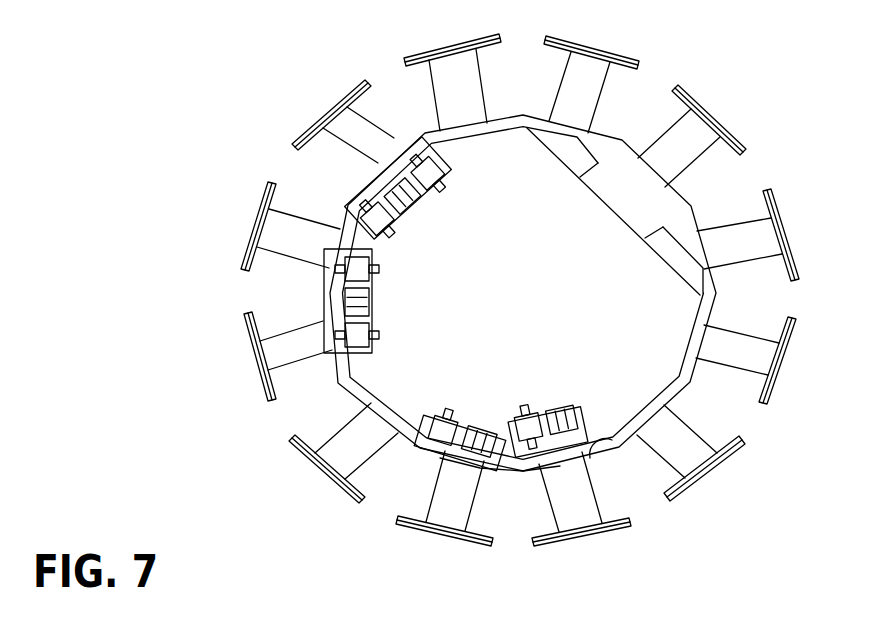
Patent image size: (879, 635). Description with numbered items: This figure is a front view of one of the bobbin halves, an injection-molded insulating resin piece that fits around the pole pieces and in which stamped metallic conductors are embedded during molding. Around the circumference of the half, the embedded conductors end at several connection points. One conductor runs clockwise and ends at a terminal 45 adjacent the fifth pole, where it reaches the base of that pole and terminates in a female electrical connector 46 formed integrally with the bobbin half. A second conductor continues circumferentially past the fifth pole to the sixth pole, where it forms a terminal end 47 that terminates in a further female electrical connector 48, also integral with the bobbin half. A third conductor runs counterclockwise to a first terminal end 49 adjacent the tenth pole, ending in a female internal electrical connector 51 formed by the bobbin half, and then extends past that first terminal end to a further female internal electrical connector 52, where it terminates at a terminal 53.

The terminal 45 is at (552, 433).
The female electrical connector 46 is at (608, 450).
The terminal end 47 is at (493, 460).
The female electrical connector 48 is at (404, 445).
The first terminal end 49 is at (415, 207).
The female internal electrical connector 51 is at (438, 133).
The female internal electrical connector 52 is at (375, 313).
The terminal 53 is at (345, 298).